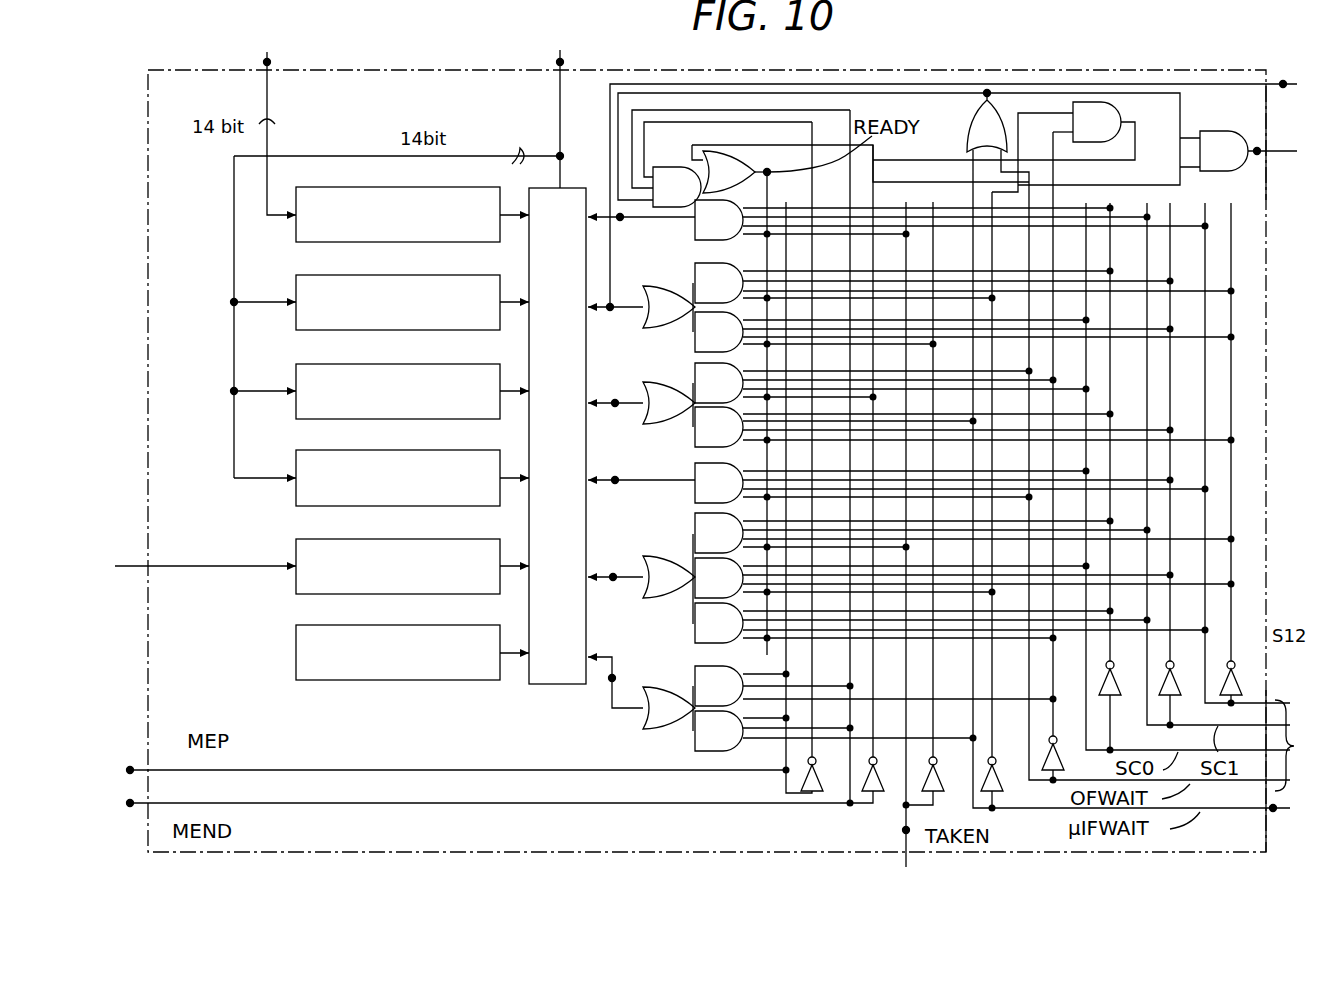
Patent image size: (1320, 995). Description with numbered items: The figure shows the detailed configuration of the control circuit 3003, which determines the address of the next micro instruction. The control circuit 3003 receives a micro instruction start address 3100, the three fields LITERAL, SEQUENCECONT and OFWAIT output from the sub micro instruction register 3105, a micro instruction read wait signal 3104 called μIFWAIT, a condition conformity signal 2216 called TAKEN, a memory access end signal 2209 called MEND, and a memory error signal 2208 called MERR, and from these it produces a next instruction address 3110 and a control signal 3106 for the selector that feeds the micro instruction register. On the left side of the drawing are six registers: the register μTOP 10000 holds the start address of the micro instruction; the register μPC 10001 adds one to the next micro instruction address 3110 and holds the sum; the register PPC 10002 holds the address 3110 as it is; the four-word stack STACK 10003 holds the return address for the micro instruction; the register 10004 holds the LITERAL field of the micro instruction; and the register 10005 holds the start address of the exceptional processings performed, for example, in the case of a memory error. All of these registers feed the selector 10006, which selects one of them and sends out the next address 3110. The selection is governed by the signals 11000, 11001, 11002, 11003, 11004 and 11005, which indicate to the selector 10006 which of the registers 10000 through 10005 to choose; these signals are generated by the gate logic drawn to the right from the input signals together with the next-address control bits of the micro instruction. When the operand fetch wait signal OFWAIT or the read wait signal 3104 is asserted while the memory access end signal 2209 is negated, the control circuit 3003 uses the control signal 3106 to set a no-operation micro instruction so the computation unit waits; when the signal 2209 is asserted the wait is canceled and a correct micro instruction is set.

The micro instruction start address 3100 is at (270, 60).
The next instruction address 3110 is at (563, 60).
The control circuit 3003 is at (880, 72).
The control signal 3106 is at (1283, 84).
The register μTOP 10000 is at (345, 187).
The register μPC 10001 is at (296, 290).
The register PPC 10002 is at (296, 378).
The stack STACK 10003 is at (296, 465).
The LITERAL register 10004 is at (296, 553).
The exceptional processing start address register 10005 is at (296, 640).
The selector 10006 is at (548, 188).
The selection signal 11000 is at (620, 217).
The selection signal 11001 is at (635, 288).
The selection signal 11002 is at (615, 403).
The selection signal 11003 is at (625, 460).
The selection signal 11004 is at (613, 577).
The selection signal 11005 is at (612, 678).
The SMIR fields 3105 is at (130, 566).
The memory error signal 2208 is at (130, 770).
The memory access end signal 2209 is at (130, 803).
The condition conformity signal 2216 is at (906, 830).
The micro instruction read wait signal 3104 is at (1273, 812).